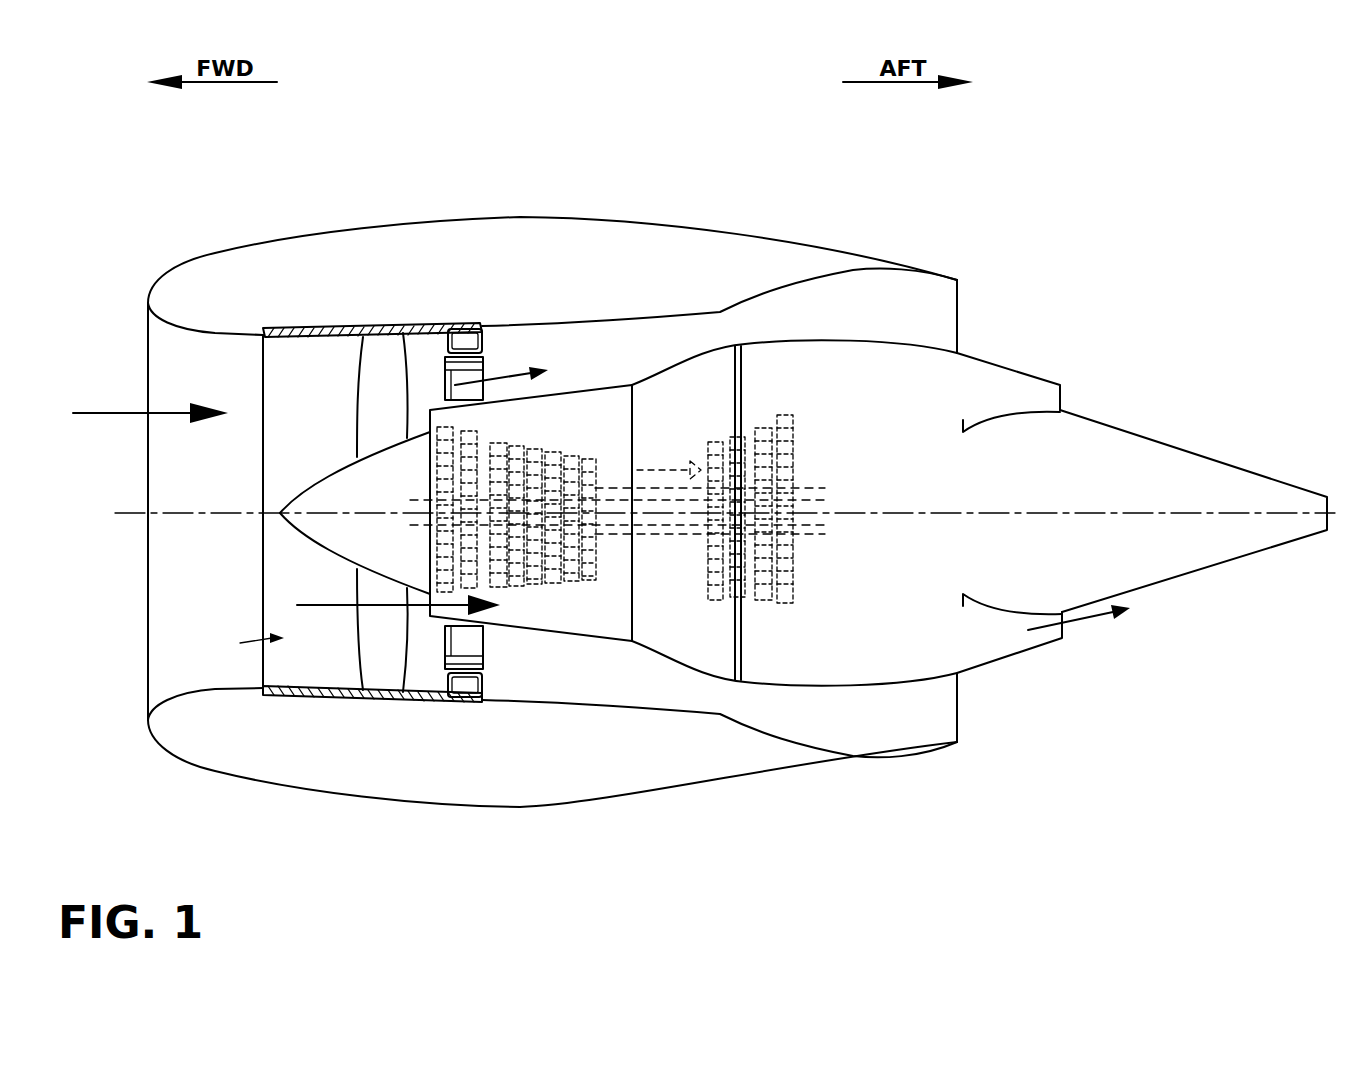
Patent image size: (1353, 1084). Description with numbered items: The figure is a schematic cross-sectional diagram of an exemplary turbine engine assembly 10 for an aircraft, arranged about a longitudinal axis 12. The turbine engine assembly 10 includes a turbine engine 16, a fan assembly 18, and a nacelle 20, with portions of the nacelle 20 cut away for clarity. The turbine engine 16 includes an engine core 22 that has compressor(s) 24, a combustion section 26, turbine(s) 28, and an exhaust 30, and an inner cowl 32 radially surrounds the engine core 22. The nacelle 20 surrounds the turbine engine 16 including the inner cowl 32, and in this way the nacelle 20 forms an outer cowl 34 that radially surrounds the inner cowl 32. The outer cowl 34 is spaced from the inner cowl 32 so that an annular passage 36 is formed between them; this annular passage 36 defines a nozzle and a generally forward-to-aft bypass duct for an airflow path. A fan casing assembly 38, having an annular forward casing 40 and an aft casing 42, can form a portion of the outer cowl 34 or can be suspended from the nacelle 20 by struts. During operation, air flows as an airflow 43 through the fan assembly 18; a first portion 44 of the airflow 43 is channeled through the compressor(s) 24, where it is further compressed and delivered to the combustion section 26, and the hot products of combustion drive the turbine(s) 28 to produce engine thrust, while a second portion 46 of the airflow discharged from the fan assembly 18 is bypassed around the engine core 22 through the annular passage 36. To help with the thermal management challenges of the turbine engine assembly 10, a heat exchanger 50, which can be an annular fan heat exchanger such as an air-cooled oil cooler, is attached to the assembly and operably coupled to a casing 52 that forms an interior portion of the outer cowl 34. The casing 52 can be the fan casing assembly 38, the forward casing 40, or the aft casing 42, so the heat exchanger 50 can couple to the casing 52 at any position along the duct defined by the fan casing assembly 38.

The turbine engine assembly 10 is at (396, 152).
The longitudinal axis 12 is at (125, 513).
The turbine engine 16 is at (608, 413).
The fan assembly 18 is at (373, 347).
The nacelle 20 is at (241, 246).
The engine core 22 is at (621, 601).
The compressor 24 is at (540, 565).
The combustion section 26 is at (662, 547).
The turbine 28 is at (760, 555).
The exhaust 30 is at (1073, 630).
The inner cowl 32 is at (747, 347).
The outer cowl 34 is at (763, 302).
The annular passage 36 is at (913, 712).
The fan casing assembly 38 is at (240, 643).
The forward casing 40 is at (263, 598).
The aft casing 42 is at (483, 347).
The airflow 43 is at (125, 413).
The first portion of the airflow 44 is at (417, 607).
The second portion of the airflow 46 is at (513, 382).
The heat exchanger 50 is at (474, 647).
The casing 52 is at (459, 310).